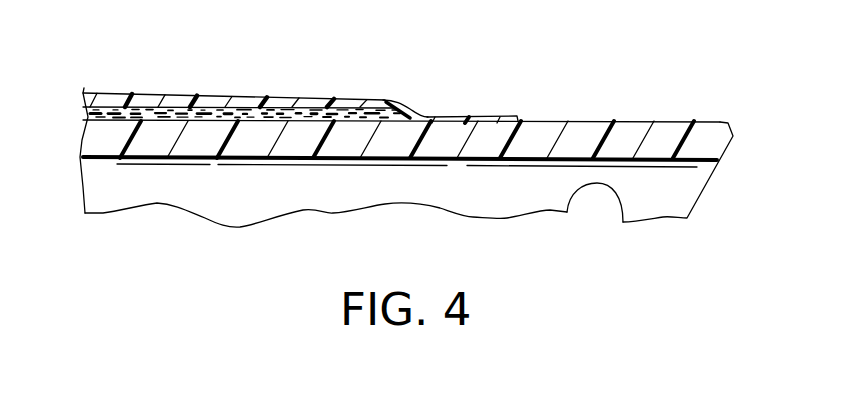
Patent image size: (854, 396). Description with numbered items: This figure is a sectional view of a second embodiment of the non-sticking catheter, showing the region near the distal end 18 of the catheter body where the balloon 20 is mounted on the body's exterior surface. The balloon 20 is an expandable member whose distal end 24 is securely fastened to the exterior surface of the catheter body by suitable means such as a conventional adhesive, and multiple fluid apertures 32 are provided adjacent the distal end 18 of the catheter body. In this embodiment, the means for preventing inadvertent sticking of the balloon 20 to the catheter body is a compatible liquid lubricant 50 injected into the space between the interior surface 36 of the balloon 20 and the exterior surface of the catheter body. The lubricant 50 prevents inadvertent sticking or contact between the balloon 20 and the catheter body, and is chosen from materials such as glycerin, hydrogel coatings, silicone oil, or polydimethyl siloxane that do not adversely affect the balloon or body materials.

The distal end 18 is at (658, 127).
The balloon 20 is at (365, 98).
The distal end of the balloon 24 is at (482, 117).
The fluid apertures 32 is at (608, 198).
The interior surface of the balloon 36 is at (320, 110).
The liquid lubricant 50 is at (220, 113).